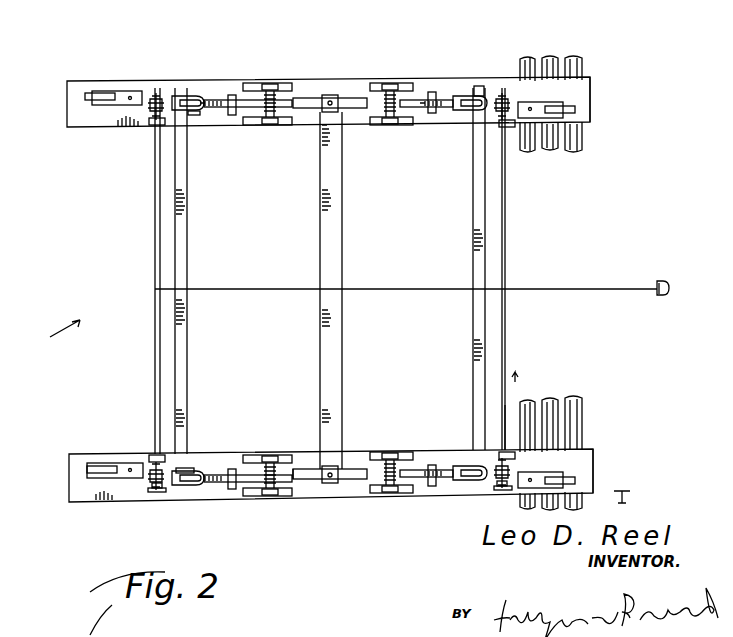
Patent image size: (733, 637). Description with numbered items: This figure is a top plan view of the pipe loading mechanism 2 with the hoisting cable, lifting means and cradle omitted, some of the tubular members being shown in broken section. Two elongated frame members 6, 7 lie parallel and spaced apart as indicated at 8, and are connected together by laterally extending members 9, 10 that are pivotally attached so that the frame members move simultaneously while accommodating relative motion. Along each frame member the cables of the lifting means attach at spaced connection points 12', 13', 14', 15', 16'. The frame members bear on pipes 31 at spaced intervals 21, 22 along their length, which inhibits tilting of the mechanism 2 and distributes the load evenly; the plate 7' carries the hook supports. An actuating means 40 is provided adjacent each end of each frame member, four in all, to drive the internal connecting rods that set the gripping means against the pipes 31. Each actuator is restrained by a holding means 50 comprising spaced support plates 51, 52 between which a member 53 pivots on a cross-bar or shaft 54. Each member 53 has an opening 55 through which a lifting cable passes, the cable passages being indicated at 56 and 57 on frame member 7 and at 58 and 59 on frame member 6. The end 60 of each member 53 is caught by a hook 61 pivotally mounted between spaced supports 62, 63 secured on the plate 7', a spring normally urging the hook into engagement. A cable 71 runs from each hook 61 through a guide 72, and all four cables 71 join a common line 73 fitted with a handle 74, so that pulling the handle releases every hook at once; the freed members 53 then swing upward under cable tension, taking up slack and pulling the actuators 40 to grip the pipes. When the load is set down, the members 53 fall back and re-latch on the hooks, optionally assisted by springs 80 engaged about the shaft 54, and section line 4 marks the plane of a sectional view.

The pipe loading mechanism 2 is at (54, 338).
The section line 4 is at (569, 438).
The frame member 6 is at (69, 123).
The frame member 7 is at (315, 475).
The plate 7' is at (308, 496).
The spacing of frame members 8 is at (306, 277).
The laterally extending member 9 is at (188, 260).
The laterally extending member 10 is at (473, 231).
The cable connection 12' is at (112, 266).
The cable connection 13' is at (247, 266).
The cable connection 14' is at (339, 289).
The cable connection 15' is at (452, 262).
The cable connection 16' is at (589, 290).
The spaced interval 21 is at (590, 78).
The spaced interval 22 is at (593, 450).
The pipe 31 is at (580, 148).
The actuating means 40 is at (106, 92).
The holding means 50 is at (213, 96).
The support plate 51 is at (282, 86).
The support plate 52 is at (279, 125).
The holding member 53 is at (214, 108).
The cross-bar or shaft 54 is at (266, 126).
The opening 55 is at (180, 96).
The cable passage 56 is at (204, 472).
The cable passage 57 is at (494, 428).
The cable passage 58 is at (193, 116).
The cable passage 59 is at (477, 97).
The end of holding member 60 is at (158, 99).
The hook 61 is at (154, 95).
The support 62 is at (154, 488).
The support 63 is at (162, 492).
The cable 71 is at (155, 175).
The guide 72 is at (157, 127).
The common line 73 is at (560, 290).
The handle 74 is at (664, 279).
The spring 80 is at (270, 86).